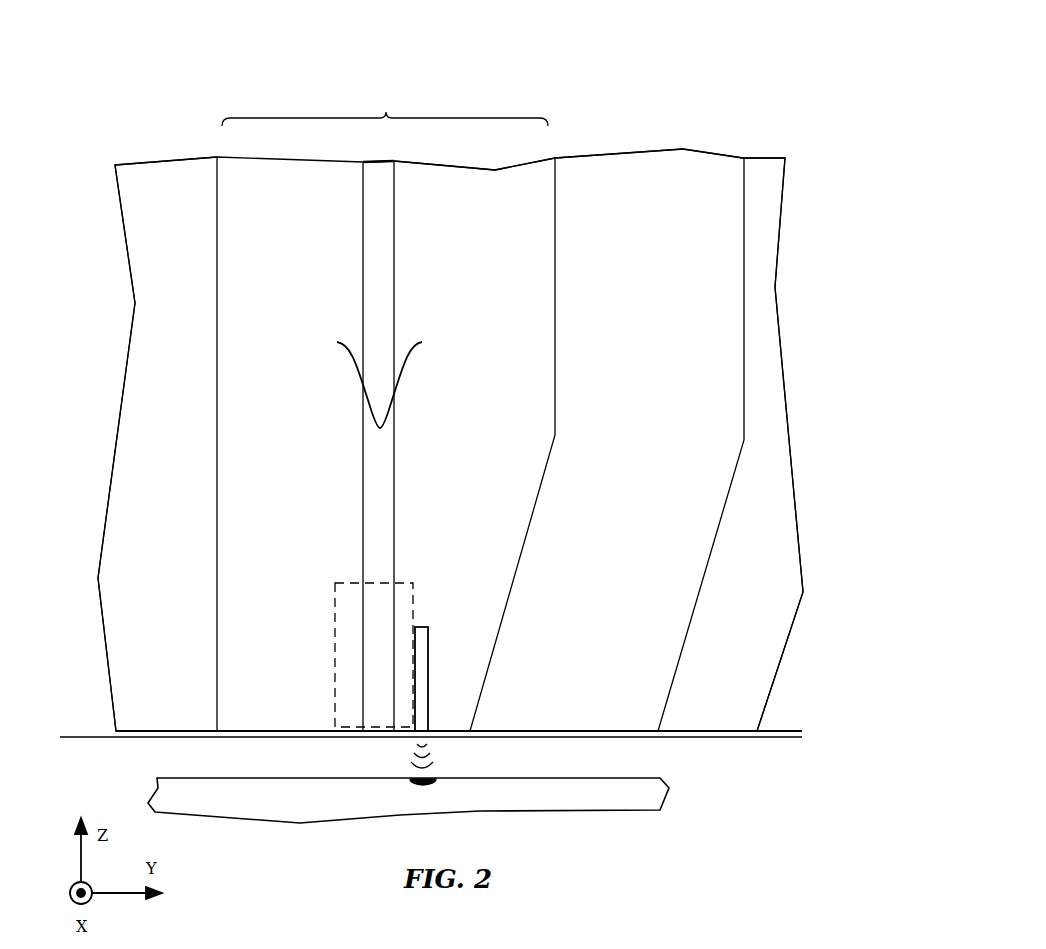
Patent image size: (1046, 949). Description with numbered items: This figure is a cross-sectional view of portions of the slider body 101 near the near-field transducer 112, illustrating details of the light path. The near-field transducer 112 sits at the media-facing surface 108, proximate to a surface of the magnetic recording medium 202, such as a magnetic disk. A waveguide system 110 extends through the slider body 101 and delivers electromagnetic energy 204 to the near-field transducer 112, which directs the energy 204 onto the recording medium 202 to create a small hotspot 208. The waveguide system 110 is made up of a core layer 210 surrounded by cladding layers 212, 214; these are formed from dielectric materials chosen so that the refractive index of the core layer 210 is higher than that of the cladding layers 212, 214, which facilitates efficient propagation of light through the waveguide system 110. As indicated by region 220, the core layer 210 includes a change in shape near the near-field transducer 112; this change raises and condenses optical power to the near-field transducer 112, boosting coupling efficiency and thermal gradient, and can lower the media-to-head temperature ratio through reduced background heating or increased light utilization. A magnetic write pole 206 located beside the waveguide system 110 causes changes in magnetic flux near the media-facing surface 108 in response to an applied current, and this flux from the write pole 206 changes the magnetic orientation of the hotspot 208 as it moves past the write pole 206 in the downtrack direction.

The slider body 101 is at (445, 432).
The waveguide system 110 is at (388, 427).
The cladding layer 214 is at (242, 160).
The core layer 210 is at (385, 162).
The cladding layer 212 is at (422, 181).
The magnetic write pole 206 is at (670, 150).
The electromagnetic energy 204 is at (352, 355).
The region 220 is at (335, 632).
The near-field transducer 112 is at (421, 710).
The media-facing surface 108 is at (705, 738).
The magnetic recording medium 202 is at (208, 797).
The hotspot 208 is at (423, 786).